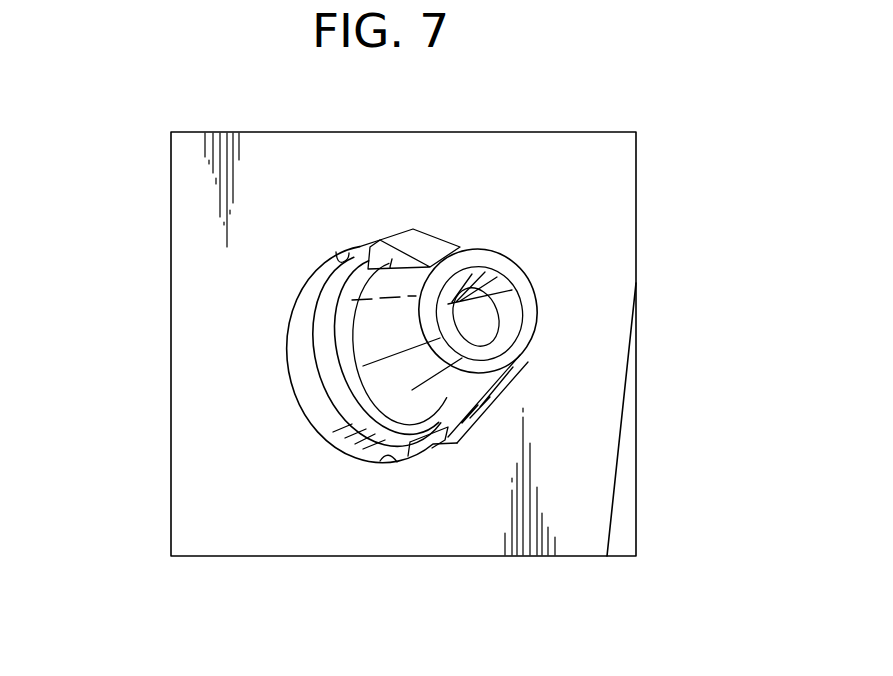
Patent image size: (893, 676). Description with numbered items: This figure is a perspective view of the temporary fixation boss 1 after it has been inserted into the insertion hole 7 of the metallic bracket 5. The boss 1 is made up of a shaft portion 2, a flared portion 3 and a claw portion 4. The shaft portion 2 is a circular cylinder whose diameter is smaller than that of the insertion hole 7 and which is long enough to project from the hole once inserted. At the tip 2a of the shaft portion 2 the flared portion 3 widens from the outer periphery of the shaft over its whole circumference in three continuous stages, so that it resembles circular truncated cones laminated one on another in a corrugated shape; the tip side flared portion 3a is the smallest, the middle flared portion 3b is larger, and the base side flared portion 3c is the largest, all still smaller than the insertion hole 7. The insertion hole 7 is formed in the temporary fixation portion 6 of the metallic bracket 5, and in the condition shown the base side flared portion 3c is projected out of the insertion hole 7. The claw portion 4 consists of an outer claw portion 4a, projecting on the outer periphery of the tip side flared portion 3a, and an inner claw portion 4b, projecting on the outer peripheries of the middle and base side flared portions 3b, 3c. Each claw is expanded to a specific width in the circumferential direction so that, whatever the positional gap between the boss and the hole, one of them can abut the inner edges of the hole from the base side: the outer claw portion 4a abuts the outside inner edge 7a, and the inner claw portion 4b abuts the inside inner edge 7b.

The temporary fixation boss 1 is at (517, 272).
The shaft portion 2 is at (388, 352).
The tip 2a is at (517, 398).
The flared portion 3 is at (255, 351).
The tip side flared portion 3a is at (372, 322).
The middle flared portion 3b is at (352, 360).
The base side flared portion 3c is at (343, 397).
The claw portion 4 is at (437, 350).
The outer claw portion 4a is at (423, 239).
The inner claw portion 4b is at (420, 450).
The metallic bracket 5 is at (618, 523).
The temporary fixation portion 6 is at (587, 482).
The insertion hole 7 is at (317, 352).
The outside inner edge 7a is at (334, 252).
The inside inner edge 7b is at (388, 458).